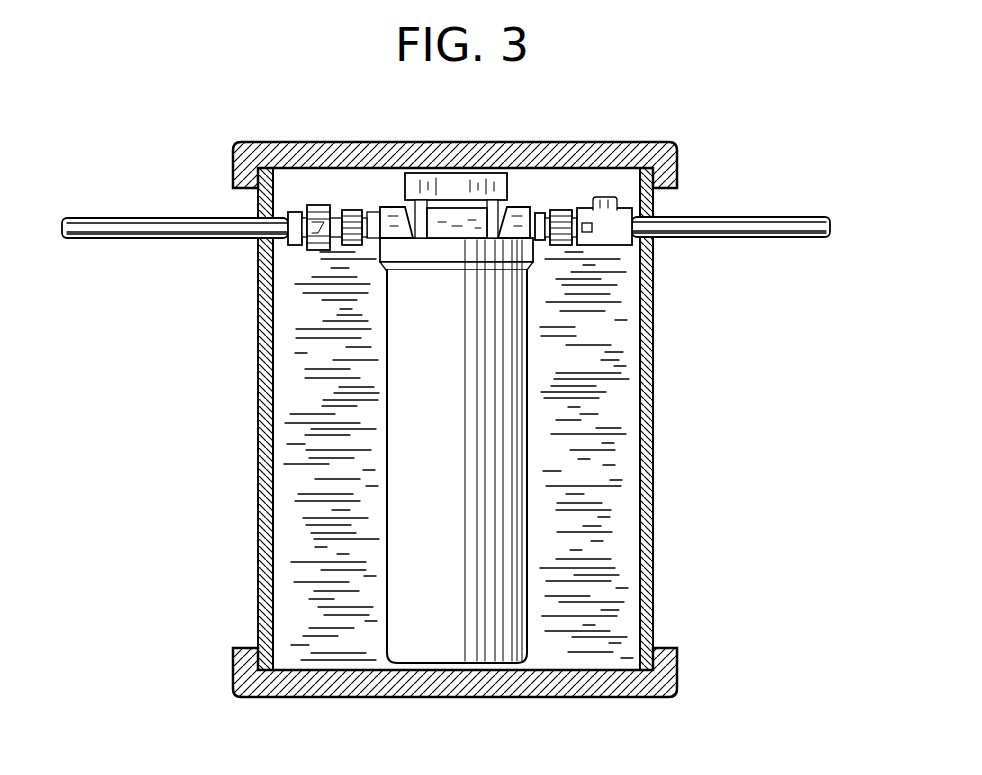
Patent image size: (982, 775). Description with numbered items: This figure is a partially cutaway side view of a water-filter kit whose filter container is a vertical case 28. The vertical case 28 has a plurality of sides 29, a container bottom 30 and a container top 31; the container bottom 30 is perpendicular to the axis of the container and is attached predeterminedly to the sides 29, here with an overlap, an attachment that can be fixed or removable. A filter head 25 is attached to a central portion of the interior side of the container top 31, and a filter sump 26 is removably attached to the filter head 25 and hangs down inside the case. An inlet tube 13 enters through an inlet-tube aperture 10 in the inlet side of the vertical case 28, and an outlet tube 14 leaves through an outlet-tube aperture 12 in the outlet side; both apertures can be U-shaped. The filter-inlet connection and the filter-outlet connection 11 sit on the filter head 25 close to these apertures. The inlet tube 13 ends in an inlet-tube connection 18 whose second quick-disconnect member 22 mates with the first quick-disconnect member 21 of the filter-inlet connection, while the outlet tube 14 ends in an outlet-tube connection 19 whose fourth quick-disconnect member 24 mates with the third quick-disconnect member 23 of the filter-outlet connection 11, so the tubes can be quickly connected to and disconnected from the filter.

The inlet-tube aperture 10 is at (650, 253).
The filter-outlet connection 11 is at (392, 207).
The outlet-tube aperture 12 is at (260, 252).
The inlet tube 13 is at (720, 217).
The outlet tube 14 is at (137, 225).
The inlet-tube connection 18 is at (625, 182).
The outlet-tube connection 19 is at (294, 192).
The first quick-disconnect member 21 is at (574, 210).
The second quick-disconnect member 22 is at (603, 200).
The third quick-disconnect member 23 is at (338, 207).
The fourth quick-disconnect member 24 is at (303, 206).
The filter head 25 is at (456, 222).
The filter sump 26 is at (487, 467).
The vertical case 28 is at (190, 458).
The sides 29 is at (651, 403).
The container bottom 30 is at (432, 688).
The container top 31 is at (488, 173).